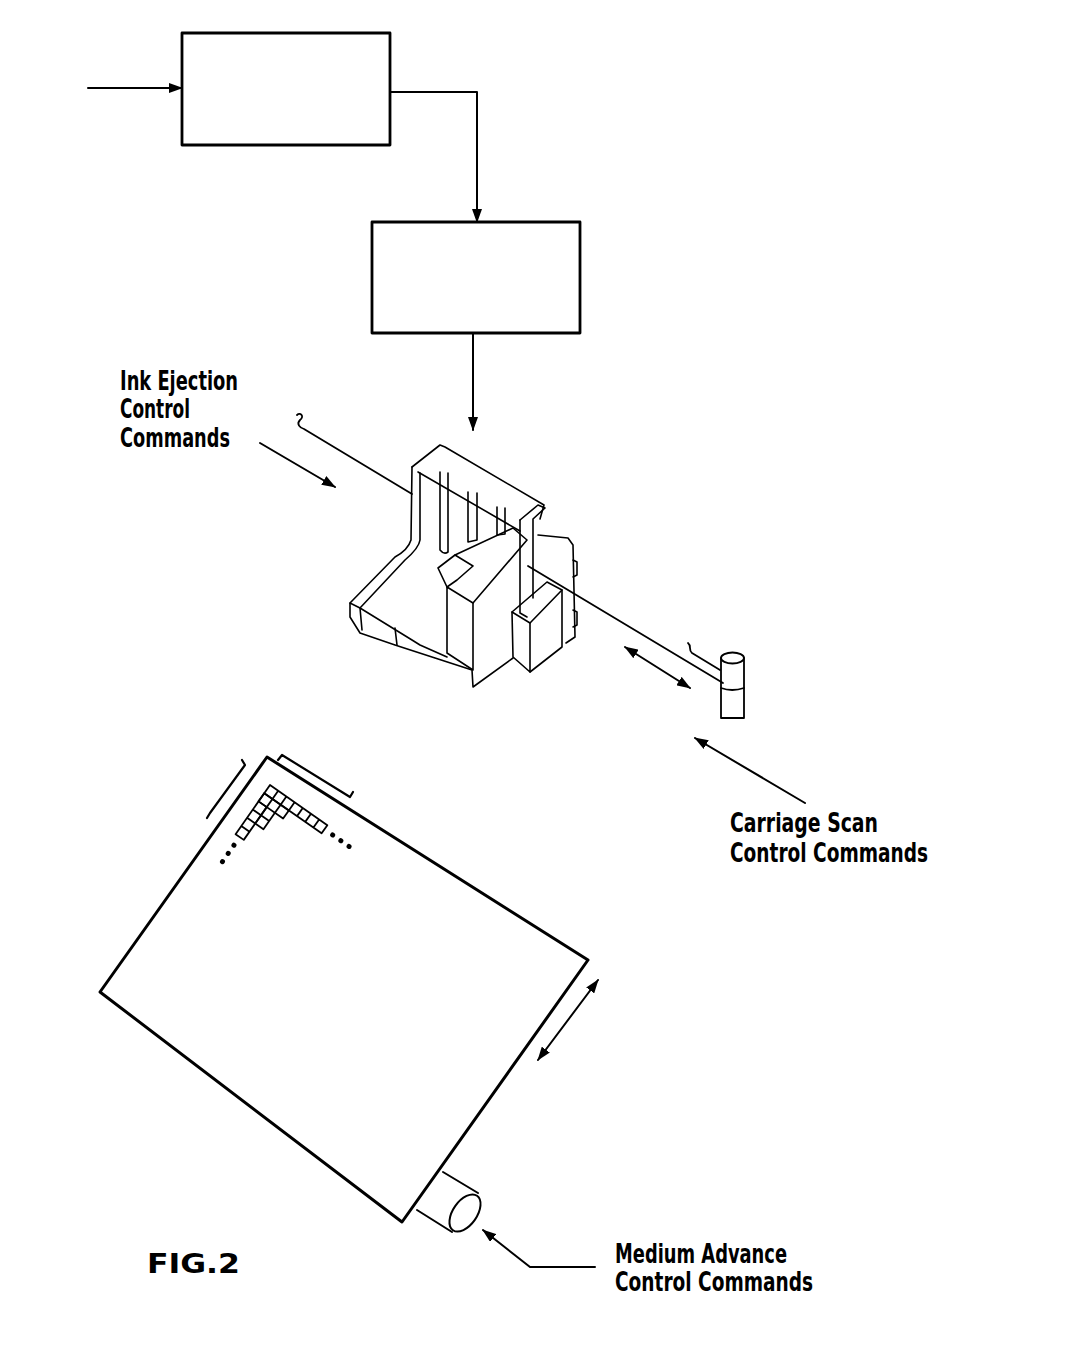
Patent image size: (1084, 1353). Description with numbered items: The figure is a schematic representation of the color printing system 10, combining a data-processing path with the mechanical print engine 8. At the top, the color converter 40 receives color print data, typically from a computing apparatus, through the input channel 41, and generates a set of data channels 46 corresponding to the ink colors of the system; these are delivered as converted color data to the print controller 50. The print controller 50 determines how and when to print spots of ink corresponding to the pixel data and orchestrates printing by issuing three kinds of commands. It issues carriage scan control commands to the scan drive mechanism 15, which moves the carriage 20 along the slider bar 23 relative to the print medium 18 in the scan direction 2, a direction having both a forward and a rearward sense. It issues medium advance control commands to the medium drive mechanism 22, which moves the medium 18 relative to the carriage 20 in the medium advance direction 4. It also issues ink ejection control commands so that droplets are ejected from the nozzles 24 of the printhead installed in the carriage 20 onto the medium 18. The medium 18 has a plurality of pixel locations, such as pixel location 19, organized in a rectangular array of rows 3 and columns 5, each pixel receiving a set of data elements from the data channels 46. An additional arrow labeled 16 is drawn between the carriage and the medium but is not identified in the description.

The input channel 41 is at (131, 88).
The color converter 40 is at (381, 72).
The data channels 46 is at (477, 183).
The print controller 50 is at (569, 263).
The printing system 10 is at (740, 397).
The print engine 8 is at (530, 468).
The carriage 20 is at (538, 518).
The nozzles 24 is at (507, 698).
The slider bar 23 is at (645, 637).
The scan direction 2 is at (650, 663).
The scan drive mechanism 15 is at (744, 690).
The print zone 16 is at (257, 693).
The print medium 18 is at (338, 1109).
The rows 3 is at (220, 790).
The columns 5 is at (312, 770).
The pixel location 19 is at (252, 820).
The medium advance direction 4 is at (568, 1020).
The medium drive mechanism 22 is at (470, 1183).